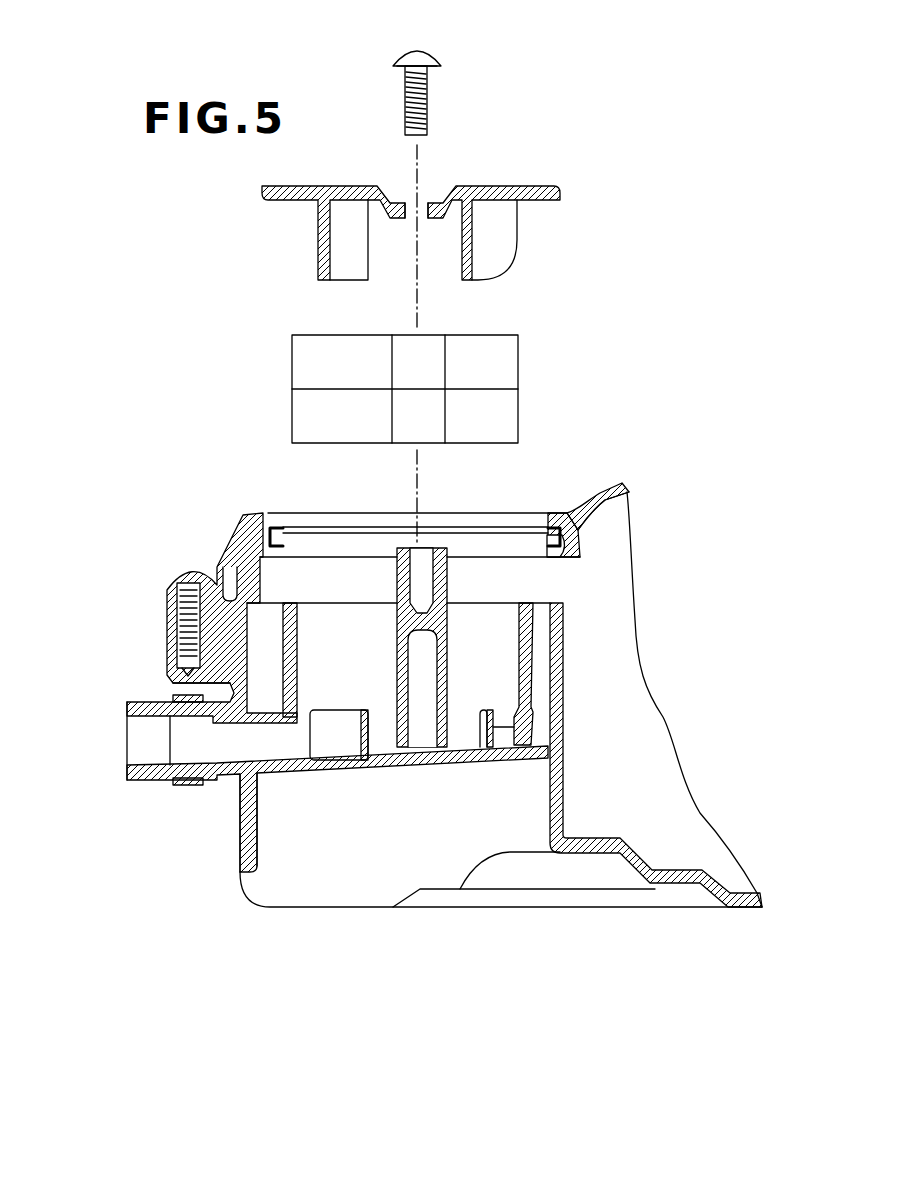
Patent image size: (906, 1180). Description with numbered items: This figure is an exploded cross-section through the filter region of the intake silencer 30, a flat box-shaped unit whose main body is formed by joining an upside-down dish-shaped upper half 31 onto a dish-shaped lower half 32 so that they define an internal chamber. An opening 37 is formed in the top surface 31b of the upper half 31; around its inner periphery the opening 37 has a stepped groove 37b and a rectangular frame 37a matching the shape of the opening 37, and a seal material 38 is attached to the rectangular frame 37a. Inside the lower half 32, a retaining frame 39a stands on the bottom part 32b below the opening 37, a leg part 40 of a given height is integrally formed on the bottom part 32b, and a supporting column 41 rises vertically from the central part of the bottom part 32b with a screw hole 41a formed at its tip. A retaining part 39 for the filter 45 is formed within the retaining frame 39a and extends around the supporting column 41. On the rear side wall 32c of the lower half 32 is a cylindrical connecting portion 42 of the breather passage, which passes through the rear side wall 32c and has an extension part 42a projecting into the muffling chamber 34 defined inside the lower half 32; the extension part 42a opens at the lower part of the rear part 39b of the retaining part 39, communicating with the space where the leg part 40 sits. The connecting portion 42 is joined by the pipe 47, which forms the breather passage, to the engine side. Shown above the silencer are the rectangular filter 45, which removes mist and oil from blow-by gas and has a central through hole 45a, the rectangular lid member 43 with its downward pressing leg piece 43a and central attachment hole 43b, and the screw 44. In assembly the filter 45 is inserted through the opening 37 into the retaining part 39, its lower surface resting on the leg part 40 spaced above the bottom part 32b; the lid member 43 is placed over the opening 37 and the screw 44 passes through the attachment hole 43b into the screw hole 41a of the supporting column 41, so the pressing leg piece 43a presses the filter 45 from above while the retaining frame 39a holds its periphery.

The intake silencer 30 is at (410, 686).
The upper half 31 is at (626, 443).
The top surface 31b is at (590, 505).
The lower half 32 is at (403, 765).
The bottom part 32b is at (323, 837).
The rear side wall 32c is at (230, 687).
The muffling chamber 34 is at (687, 808).
The opening 37 is at (373, 496).
The rectangular frame 37a is at (540, 530).
The groove 37b is at (262, 530).
The seal material 38 is at (587, 537).
The retaining part 39 is at (504, 710).
The retaining frame 39a is at (546, 657).
The rear part 39b is at (295, 648).
The leg part 40 is at (370, 730).
The supporting column 41 is at (429, 699).
The screw hole 41a is at (420, 583).
The connecting portion 42 is at (124, 786).
The extension part 42a is at (240, 833).
The lid member 43 is at (417, 185).
The pressing leg piece 43a is at (503, 248).
The attachment hole 43b is at (420, 208).
The screw 44 is at (422, 62).
The filter 45 is at (404, 371).
The through hole 45a is at (392, 356).
The pipe 47 is at (145, 777).